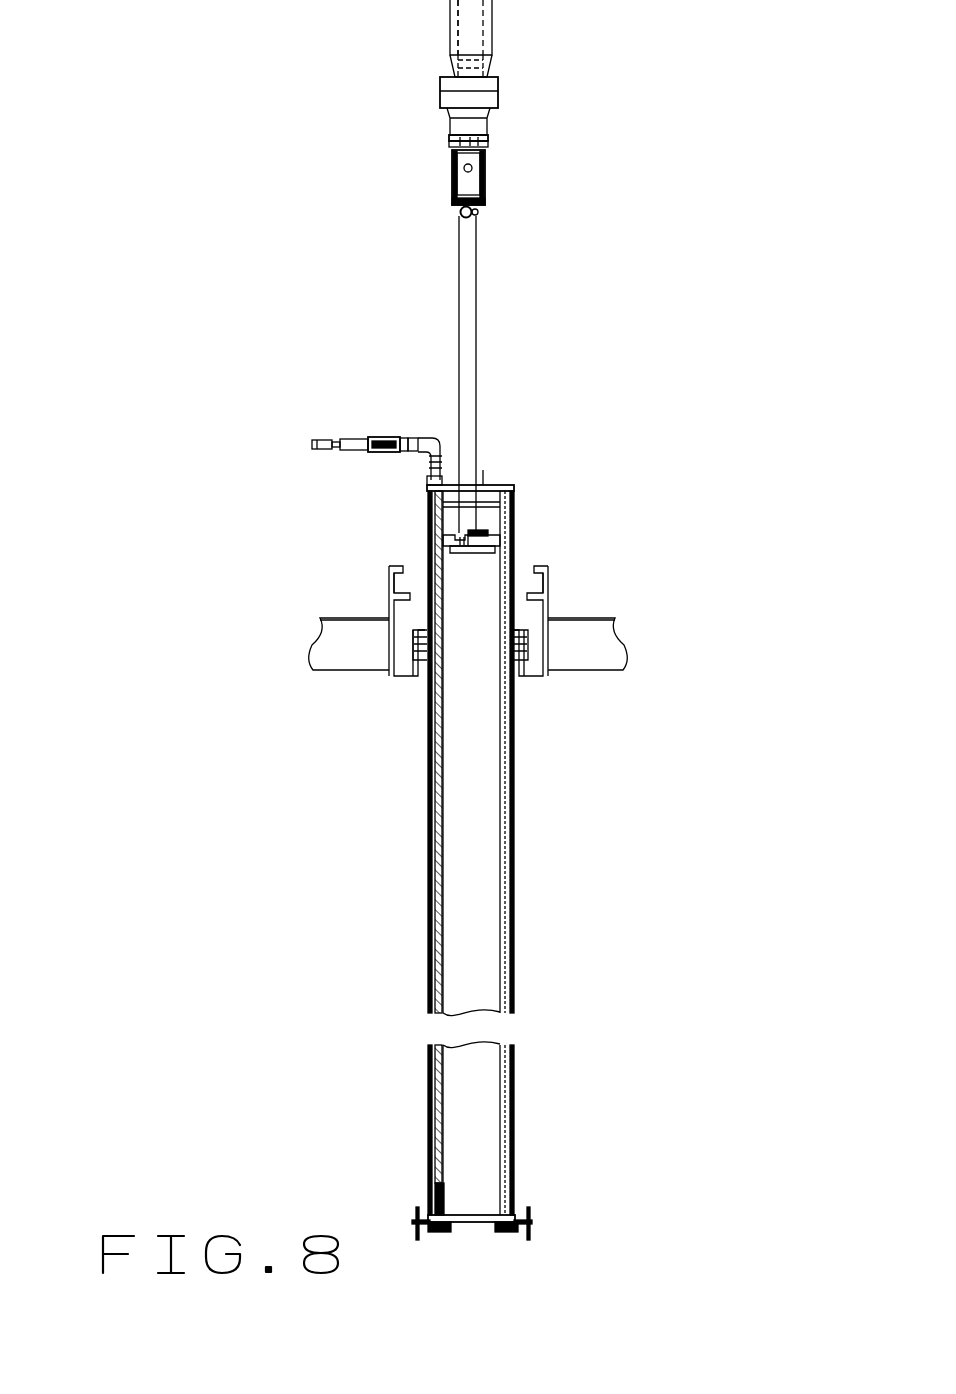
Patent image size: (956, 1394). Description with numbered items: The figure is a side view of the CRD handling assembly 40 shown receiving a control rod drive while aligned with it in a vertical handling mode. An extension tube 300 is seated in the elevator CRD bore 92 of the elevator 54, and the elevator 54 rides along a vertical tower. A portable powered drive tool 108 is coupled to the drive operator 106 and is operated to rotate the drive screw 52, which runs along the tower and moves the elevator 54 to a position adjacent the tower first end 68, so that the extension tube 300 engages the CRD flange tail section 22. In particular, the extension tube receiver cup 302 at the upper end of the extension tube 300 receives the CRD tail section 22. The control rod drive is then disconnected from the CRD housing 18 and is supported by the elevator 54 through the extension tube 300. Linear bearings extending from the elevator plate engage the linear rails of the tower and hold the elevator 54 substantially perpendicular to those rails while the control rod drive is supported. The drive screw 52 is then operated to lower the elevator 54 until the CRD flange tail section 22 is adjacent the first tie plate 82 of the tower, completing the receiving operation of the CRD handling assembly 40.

The CRD housing 18 is at (475, 25).
The CRD flange tail section 22 is at (490, 120).
The extension tube receiver cup 302 is at (487, 178).
The extension tube 300 is at (470, 337).
The elevator 54 is at (493, 532).
The drive screw 52 is at (436, 795).
The first tie plate 82 is at (483, 487).
The elevator CRD bore 92 is at (480, 550).
The tower first end 68 is at (524, 489).
The CRD handling assembly 40 is at (545, 535).
The portable powered drive tool 108 is at (370, 436).
The drive operator 106 is at (430, 477).